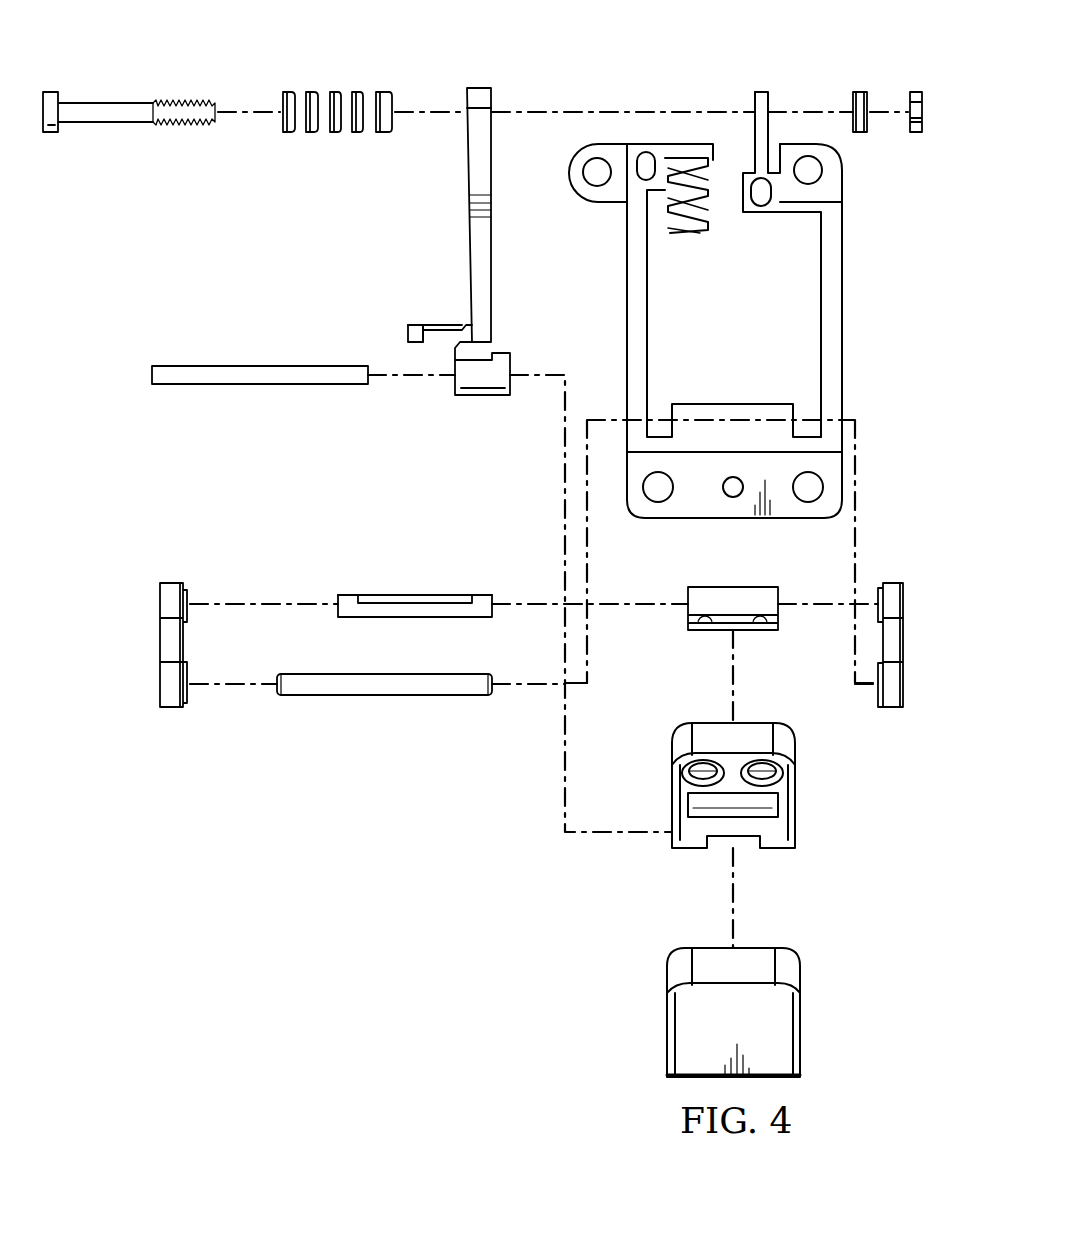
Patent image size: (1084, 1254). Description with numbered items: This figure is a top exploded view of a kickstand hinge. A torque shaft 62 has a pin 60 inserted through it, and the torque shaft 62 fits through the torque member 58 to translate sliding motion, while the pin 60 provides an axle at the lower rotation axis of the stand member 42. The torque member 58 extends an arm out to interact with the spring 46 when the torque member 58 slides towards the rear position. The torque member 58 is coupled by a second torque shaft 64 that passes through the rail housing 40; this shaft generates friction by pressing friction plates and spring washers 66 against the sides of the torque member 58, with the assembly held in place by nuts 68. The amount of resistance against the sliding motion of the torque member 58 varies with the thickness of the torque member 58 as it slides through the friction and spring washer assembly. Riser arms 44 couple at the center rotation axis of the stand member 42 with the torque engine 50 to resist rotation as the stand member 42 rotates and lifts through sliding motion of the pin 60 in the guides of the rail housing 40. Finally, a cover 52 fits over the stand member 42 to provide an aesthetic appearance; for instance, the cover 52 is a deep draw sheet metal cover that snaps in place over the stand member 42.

The rail housing 40 is at (845, 332).
The stand member 42 is at (773, 850).
The riser arms 44 is at (160, 640).
The spring 46 is at (686, 238).
The torque engine 50 is at (752, 632).
The cover 52 is at (802, 1020).
The torque member 58 is at (480, 88).
The pin 60 is at (385, 696).
The torque shaft 62 is at (413, 595).
The torque shaft 64 is at (105, 100).
The spring washers 66 is at (310, 90).
The nuts 68 is at (862, 92).